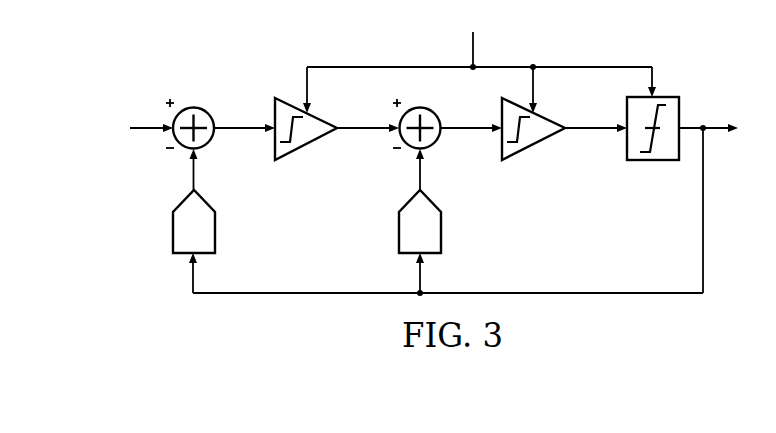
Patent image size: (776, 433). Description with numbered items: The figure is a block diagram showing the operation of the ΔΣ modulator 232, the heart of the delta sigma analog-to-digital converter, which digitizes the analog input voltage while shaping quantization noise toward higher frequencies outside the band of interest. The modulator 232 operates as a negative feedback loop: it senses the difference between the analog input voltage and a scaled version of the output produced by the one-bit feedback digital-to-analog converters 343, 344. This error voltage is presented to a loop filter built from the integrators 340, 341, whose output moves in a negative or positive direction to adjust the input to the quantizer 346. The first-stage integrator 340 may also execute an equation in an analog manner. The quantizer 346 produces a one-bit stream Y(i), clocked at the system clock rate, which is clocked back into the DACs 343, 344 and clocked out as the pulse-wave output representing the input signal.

The ΔΣ modulator 232 is at (224, 45).
The first-stage integrator 340 is at (312, 141).
The integrator 341 is at (530, 146).
The 1-bit feedback digital-to-analog converter 343 is at (173, 232).
The 1-bit feedback digital-to-analog converter 344 is at (399, 232).
The quantizer 346 is at (658, 160).